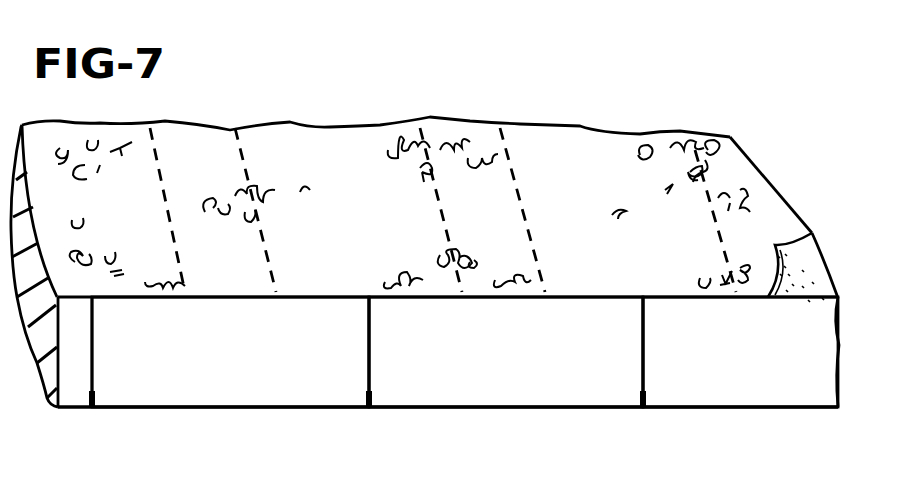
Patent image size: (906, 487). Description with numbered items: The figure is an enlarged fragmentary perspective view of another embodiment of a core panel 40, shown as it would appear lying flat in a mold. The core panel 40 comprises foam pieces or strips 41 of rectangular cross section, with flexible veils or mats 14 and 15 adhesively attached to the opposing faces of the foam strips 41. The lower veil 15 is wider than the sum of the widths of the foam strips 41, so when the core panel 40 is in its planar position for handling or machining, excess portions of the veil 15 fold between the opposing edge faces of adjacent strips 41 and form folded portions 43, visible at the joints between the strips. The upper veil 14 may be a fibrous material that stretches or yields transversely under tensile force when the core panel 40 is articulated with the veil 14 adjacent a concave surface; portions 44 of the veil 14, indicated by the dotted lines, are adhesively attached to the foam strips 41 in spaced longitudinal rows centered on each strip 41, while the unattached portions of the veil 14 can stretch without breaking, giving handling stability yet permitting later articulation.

The core panel 40 is at (320, 118).
The veil 14 is at (594, 130).
The veil 15 is at (482, 410).
The foam strips 41 is at (220, 393).
The folded portions 43 is at (82, 400).
The portions 44 is at (210, 120).